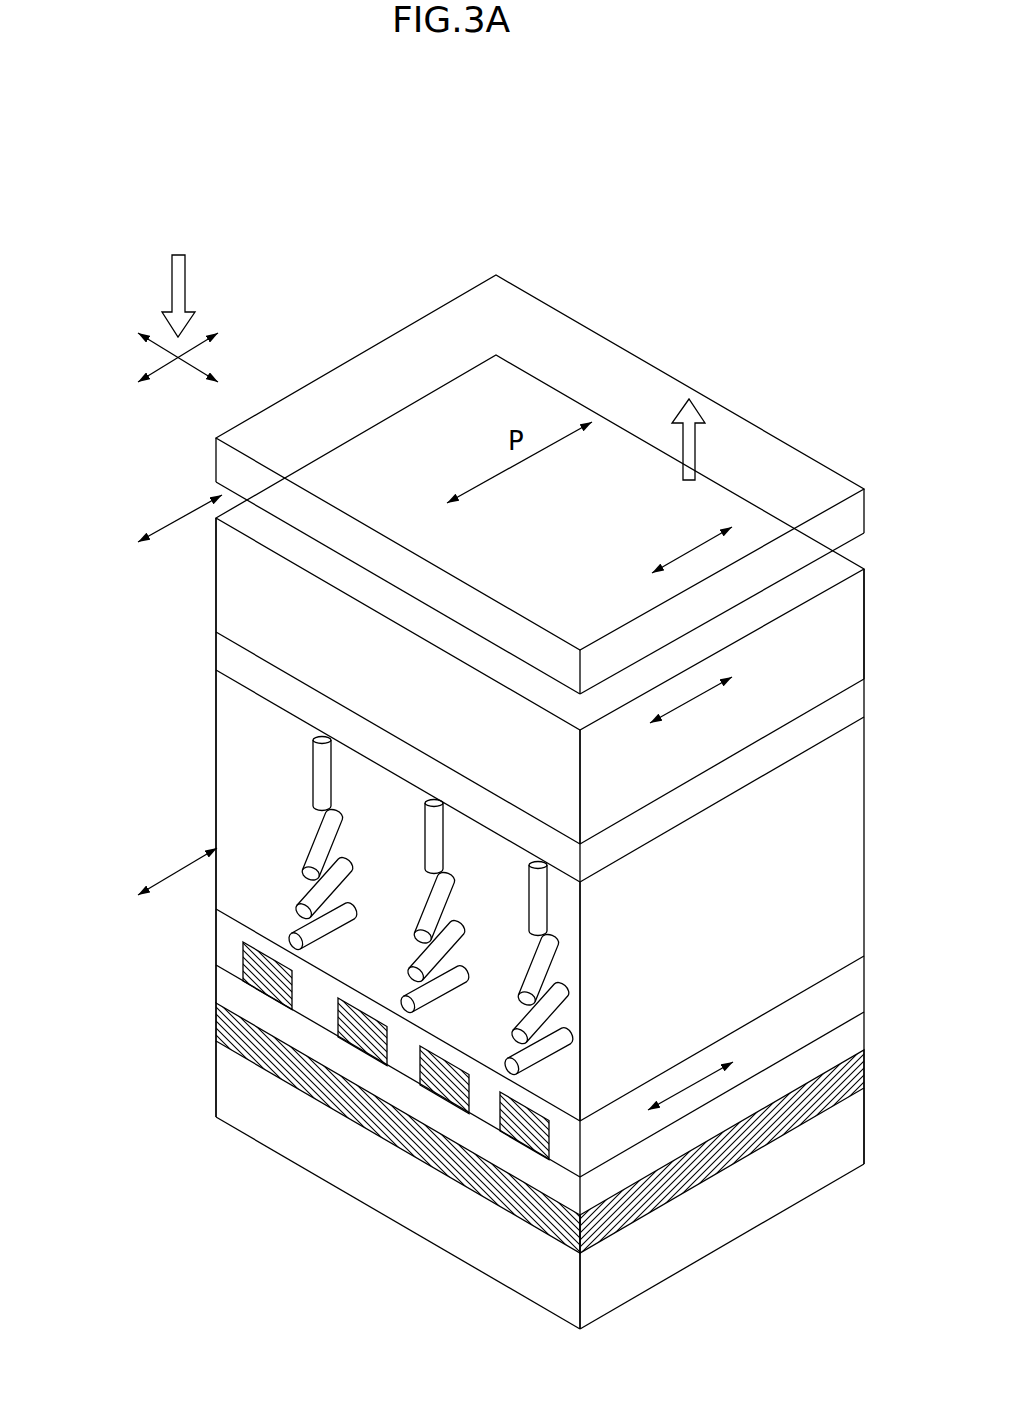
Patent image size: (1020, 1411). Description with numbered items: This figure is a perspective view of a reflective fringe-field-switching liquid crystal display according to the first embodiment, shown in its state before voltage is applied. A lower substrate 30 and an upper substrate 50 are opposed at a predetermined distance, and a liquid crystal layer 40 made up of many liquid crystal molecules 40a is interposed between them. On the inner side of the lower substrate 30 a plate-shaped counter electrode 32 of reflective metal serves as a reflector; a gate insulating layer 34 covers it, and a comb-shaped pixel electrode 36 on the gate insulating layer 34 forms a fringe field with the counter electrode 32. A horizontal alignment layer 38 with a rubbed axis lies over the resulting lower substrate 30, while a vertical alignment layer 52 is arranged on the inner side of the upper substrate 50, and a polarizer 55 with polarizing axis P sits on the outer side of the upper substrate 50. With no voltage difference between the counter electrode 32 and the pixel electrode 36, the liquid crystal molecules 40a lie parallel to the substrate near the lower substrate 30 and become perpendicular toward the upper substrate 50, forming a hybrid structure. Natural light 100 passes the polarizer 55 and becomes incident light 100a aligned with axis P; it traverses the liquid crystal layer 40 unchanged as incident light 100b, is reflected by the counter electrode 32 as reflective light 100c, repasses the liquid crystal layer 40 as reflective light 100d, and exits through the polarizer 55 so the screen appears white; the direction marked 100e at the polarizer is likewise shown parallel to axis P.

The natural light 100 is at (167, 363).
The incident light 100a is at (163, 522).
The incident light 100b is at (173, 868).
The reflective light 100c is at (697, 1083).
The reflective light 100d is at (693, 700).
The polarization direction 100e is at (700, 543).
The polarizer 55 is at (217, 468).
The upper substrate 50 is at (217, 582).
The vertical alignment layer 52 is at (222, 658).
The liquid crystal layer 40 is at (228, 790).
The liquid crystal molecules 40a is at (315, 773).
The horizontal alignment layer 38 is at (225, 930).
The pixel electrode 36 is at (243, 972).
The gate insulating layer 34 is at (228, 990).
The counter electrode 32 is at (228, 1033).
The lower substrate 30 is at (228, 1090).